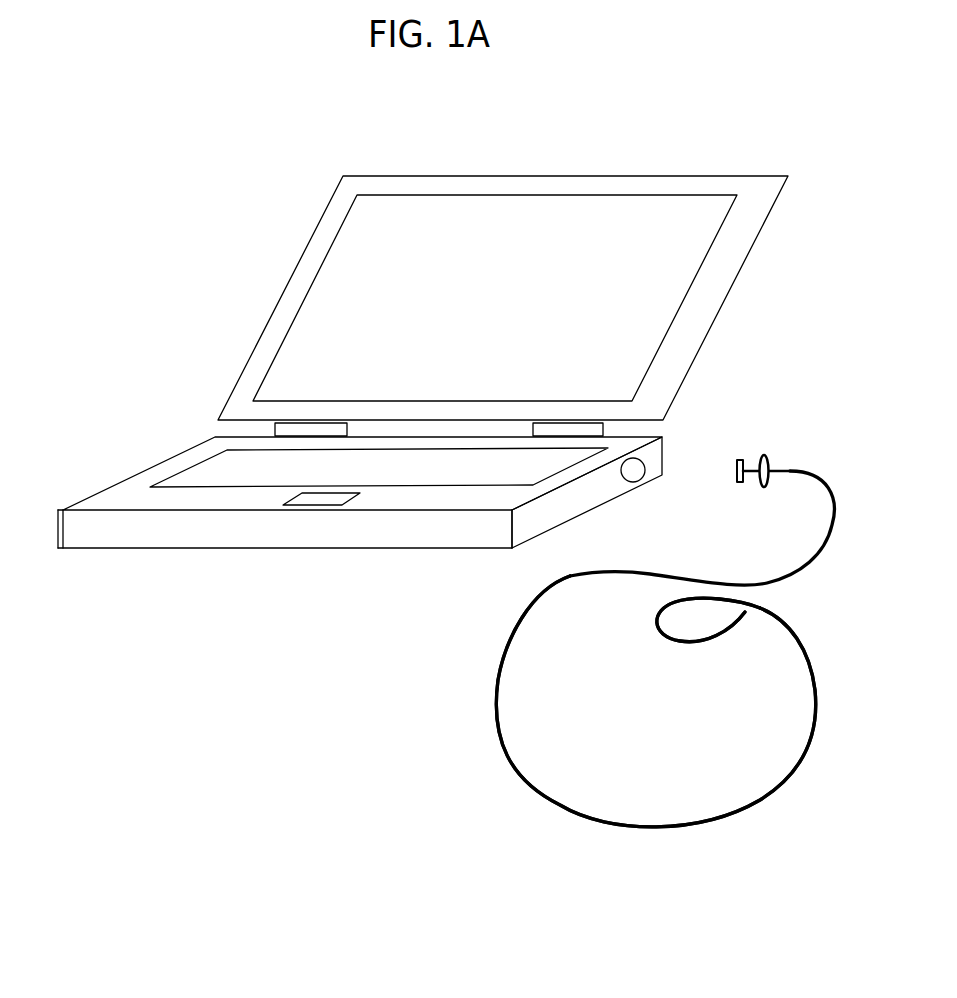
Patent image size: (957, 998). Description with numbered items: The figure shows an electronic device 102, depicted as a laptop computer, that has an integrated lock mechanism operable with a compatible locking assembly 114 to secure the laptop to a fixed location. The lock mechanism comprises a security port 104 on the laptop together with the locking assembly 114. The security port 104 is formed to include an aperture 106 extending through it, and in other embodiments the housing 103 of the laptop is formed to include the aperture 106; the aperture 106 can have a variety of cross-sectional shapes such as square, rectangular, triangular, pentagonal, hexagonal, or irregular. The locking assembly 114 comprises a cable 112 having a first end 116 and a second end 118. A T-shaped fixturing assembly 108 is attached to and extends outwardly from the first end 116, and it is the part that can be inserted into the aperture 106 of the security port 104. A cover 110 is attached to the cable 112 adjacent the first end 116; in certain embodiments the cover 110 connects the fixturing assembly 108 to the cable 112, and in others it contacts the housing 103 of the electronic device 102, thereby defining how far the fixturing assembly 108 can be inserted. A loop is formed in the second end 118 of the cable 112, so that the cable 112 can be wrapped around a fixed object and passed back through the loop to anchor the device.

The electronic device 102 is at (411, 278).
The housing 103 is at (377, 521).
The security port 104 is at (633, 482).
The aperture 106 is at (647, 462).
The T-shaped fixturing assembly 108 is at (618, 645).
The cover 110 is at (762, 452).
The cable 112 is at (490, 694).
The locking assembly 114 is at (746, 826).
The first end 116 is at (792, 468).
The second end 118 is at (762, 608).